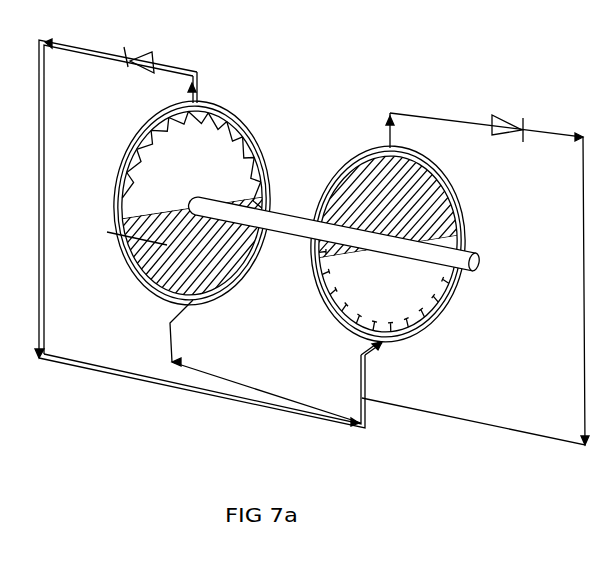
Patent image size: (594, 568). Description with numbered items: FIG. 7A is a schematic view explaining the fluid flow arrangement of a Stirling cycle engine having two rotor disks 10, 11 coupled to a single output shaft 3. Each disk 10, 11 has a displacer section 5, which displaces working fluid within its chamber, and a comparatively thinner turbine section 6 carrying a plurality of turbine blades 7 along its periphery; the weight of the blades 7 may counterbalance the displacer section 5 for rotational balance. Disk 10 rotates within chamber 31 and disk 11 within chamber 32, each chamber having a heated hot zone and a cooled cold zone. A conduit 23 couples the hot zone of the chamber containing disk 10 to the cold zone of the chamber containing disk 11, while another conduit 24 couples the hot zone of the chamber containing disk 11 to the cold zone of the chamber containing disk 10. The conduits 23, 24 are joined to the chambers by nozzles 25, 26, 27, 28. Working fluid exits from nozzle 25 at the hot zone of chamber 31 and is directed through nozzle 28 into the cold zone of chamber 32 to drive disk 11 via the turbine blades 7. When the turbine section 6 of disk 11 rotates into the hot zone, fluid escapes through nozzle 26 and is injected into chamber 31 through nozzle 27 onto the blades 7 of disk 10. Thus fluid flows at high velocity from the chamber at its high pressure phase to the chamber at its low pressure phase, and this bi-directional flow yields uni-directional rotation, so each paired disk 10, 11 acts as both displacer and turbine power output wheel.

The output shaft 3 is at (473, 253).
The displacer section 5 is at (162, 296).
The turbine section 6 is at (233, 136).
The turbine blades 7 is at (163, 118).
The rotor disk 10 is at (227, 181).
The rotor disk 11 is at (394, 297).
The conduit 23 is at (226, 402).
The conduit 24 is at (294, 387).
The nozzle 25 is at (200, 107).
The nozzle 26 is at (392, 155).
The nozzle 27 is at (193, 300).
The nozzle 28 is at (381, 344).
The chamber 31 is at (270, 141).
The chamber 32 is at (476, 219).